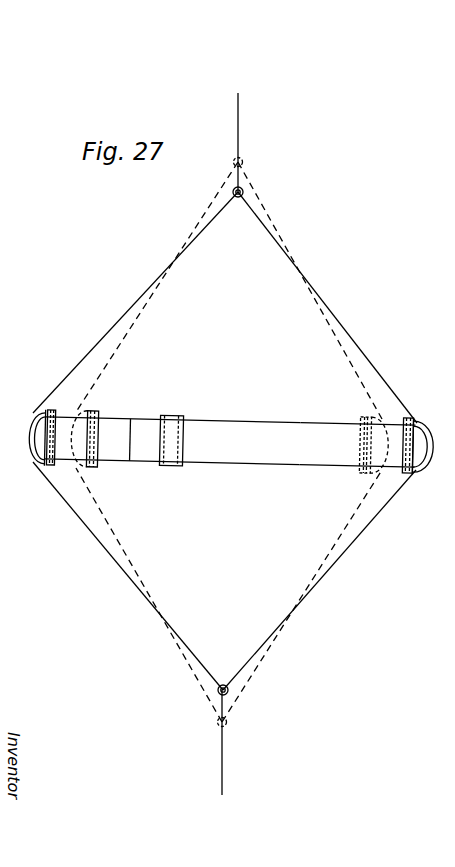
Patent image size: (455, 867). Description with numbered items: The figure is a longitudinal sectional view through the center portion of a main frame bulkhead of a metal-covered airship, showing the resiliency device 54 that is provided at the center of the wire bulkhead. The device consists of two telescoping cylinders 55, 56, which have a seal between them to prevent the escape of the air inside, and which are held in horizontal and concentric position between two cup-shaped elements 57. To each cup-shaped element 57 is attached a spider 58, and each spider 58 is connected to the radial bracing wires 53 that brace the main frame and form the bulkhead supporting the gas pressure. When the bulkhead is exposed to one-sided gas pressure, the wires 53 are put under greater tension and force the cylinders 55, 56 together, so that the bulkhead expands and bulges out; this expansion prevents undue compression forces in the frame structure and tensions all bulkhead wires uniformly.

The radial wires 53 is at (238, 125).
The resiliency device 54 is at (262, 406).
The telescoping cylinder 55 is at (305, 421).
The telescoping cylinder 56 is at (121, 420).
The cup-shaped element 57 is at (37, 416).
The spider 58 is at (121, 323).